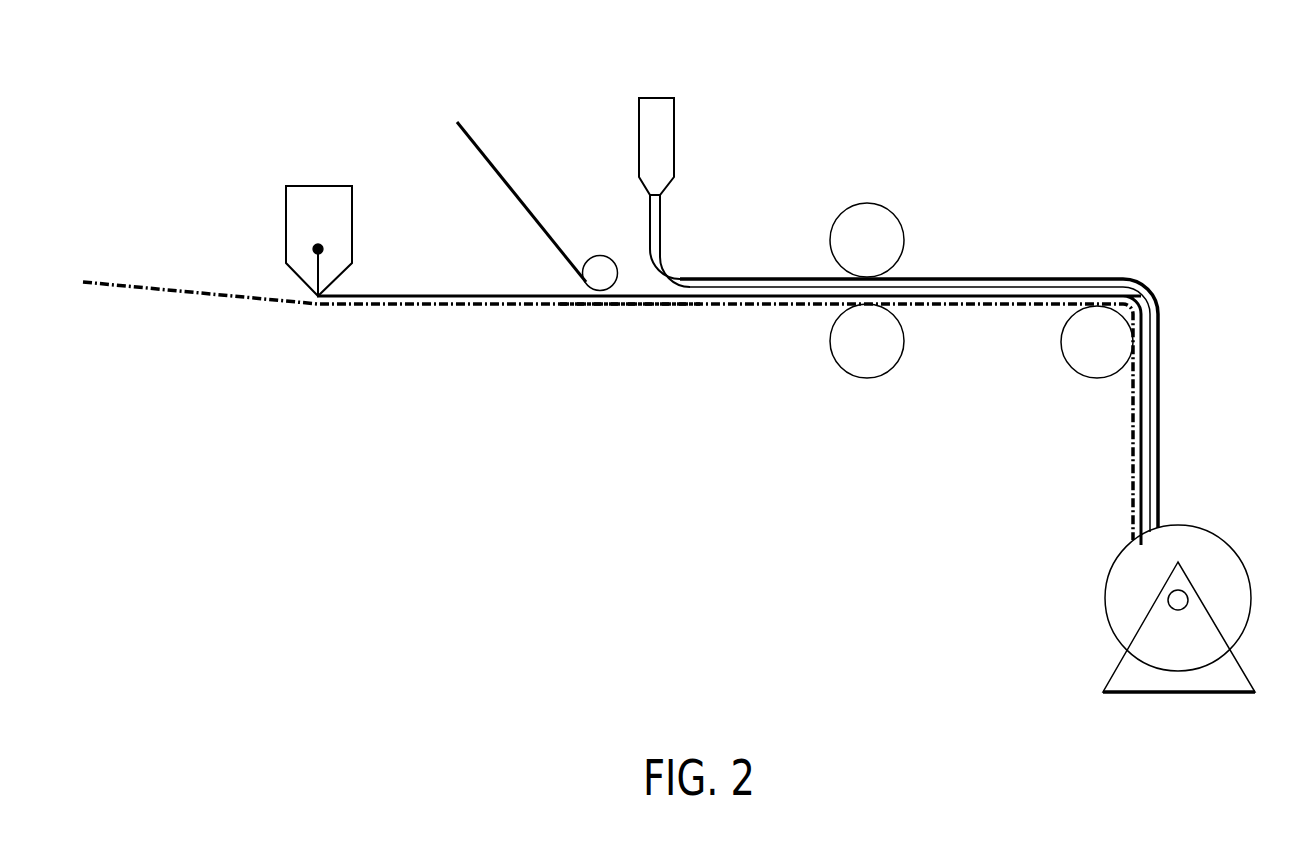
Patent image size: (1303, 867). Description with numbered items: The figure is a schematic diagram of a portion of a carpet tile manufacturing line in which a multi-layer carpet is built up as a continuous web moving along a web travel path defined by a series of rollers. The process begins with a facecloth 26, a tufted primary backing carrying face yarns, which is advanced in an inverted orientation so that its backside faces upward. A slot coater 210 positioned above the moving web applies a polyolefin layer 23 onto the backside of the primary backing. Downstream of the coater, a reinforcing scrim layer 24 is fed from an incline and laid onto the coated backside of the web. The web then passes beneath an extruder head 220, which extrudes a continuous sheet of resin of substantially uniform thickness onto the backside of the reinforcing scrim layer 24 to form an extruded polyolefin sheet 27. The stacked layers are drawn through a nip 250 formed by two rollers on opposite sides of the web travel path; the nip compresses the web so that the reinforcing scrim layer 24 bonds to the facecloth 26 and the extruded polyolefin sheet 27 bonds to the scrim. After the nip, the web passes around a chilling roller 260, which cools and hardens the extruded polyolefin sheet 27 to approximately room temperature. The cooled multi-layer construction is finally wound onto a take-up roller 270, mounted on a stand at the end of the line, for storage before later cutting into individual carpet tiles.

The slot coater 210 is at (315, 183).
The polyolefin layer 23 is at (410, 296).
The reinforcing scrim layer 24 is at (513, 192).
The facecloth 26 is at (628, 310).
The extruder head 220 is at (657, 97).
The extruded polyolefin sheet 27 is at (660, 245).
The nip 250 is at (872, 202).
The chilling roller 260 is at (1085, 373).
The take-up roller 270 is at (1104, 590).